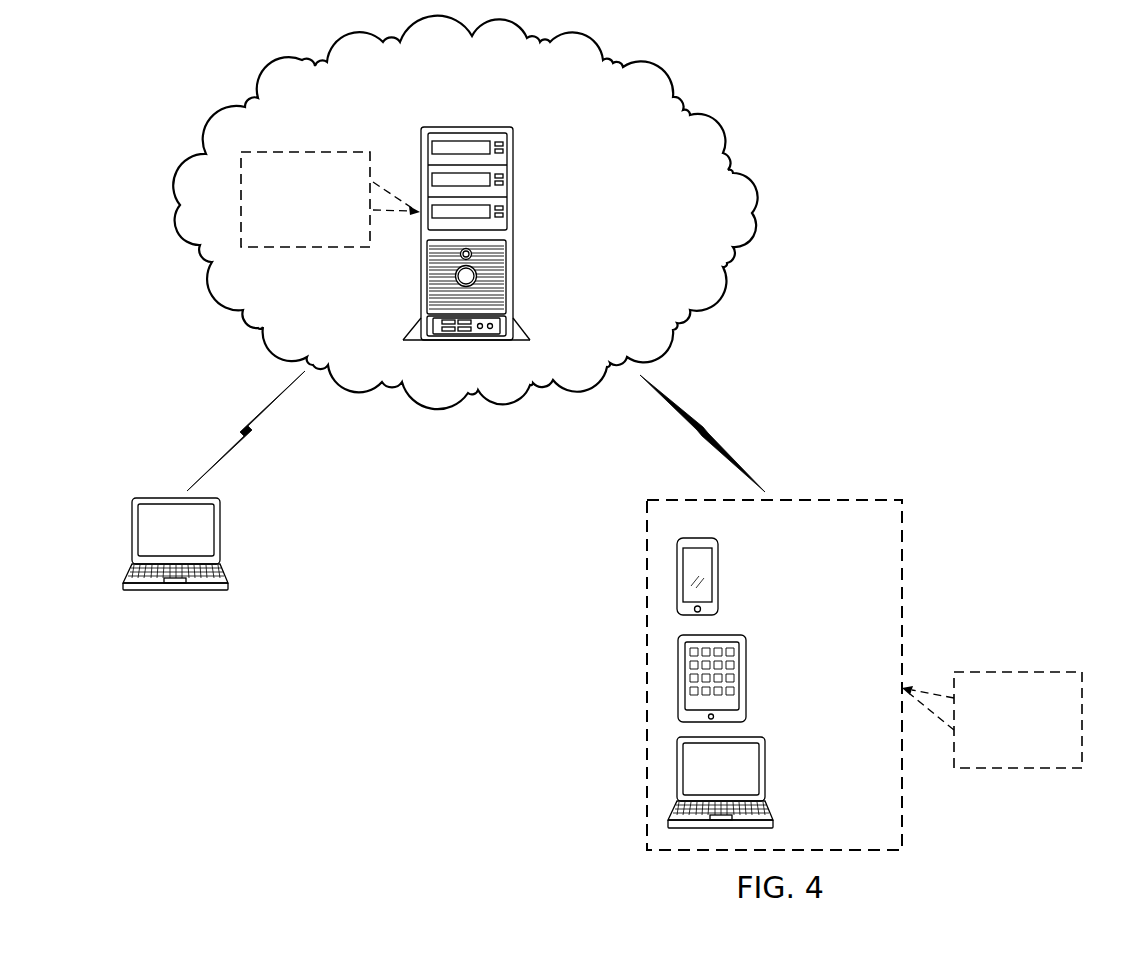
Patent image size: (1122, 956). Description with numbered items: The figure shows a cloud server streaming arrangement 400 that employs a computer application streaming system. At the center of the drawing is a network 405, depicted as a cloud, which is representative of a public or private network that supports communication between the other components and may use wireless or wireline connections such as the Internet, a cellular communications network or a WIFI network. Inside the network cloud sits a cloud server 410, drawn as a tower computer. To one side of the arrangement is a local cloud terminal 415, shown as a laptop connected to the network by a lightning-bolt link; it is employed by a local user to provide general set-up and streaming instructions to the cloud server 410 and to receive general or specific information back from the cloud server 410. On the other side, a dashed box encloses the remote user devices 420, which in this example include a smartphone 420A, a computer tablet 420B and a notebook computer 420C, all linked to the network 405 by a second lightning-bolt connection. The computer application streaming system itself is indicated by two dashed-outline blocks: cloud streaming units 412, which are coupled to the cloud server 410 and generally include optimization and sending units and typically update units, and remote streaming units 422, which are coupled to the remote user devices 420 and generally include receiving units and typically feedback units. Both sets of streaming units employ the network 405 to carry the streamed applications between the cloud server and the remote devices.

The streaming arrangement 400 is at (940, 152).
The network 405 is at (755, 214).
The cloud server 410 is at (466, 127).
The cloud streaming units 412 is at (290, 247).
The local cloud terminal 415 is at (132, 530).
The remote user devices 420 is at (851, 491).
The smartphone 420A is at (720, 579).
The computer tablet 420B is at (748, 680).
The notebook computer 420C is at (766, 770).
The remote streaming units 422 is at (1025, 768).